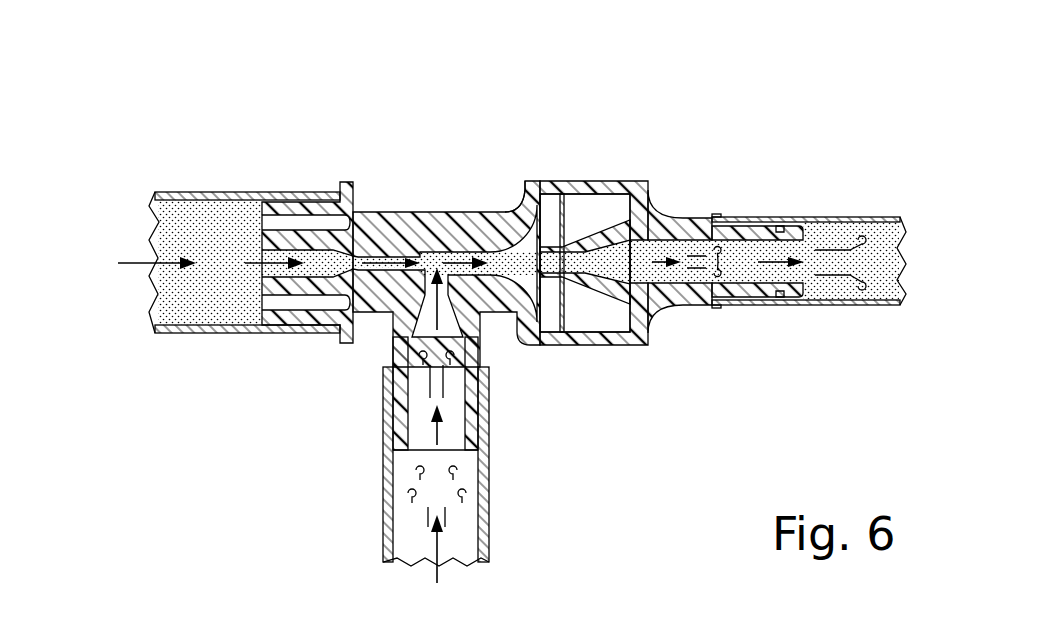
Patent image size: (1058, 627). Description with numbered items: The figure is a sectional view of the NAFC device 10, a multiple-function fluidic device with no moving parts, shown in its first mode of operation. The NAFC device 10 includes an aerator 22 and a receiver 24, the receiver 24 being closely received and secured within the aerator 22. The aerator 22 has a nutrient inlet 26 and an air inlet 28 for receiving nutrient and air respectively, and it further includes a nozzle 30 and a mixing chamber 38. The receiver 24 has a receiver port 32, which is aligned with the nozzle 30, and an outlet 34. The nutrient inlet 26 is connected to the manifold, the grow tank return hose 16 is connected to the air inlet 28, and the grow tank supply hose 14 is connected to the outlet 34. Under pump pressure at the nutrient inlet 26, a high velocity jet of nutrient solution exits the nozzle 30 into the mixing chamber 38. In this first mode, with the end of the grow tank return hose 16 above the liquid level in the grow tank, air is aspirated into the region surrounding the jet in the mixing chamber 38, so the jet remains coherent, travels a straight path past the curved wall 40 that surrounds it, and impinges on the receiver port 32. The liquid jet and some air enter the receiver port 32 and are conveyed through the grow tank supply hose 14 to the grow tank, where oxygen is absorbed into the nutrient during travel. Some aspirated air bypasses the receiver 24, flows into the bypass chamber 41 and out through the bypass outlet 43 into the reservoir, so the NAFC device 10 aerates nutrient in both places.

The NAFC device 10 is at (452, 170).
The grow tank supply hose 14 is at (862, 217).
The grow tank return hose 16 is at (489, 517).
The aerator 22 is at (389, 200).
The receiver 24 is at (704, 202).
The nutrient inlet 26 is at (266, 268).
The air inlet 28 is at (458, 434).
The nozzle 30 is at (420, 250).
The receiver port 32 is at (566, 265).
The outlet 34 is at (768, 283).
The mixing chamber 38 is at (462, 252).
The curved wall 40 is at (526, 188).
The bypass chamber 41 is at (578, 216).
The bypass outlet 43 is at (646, 193).